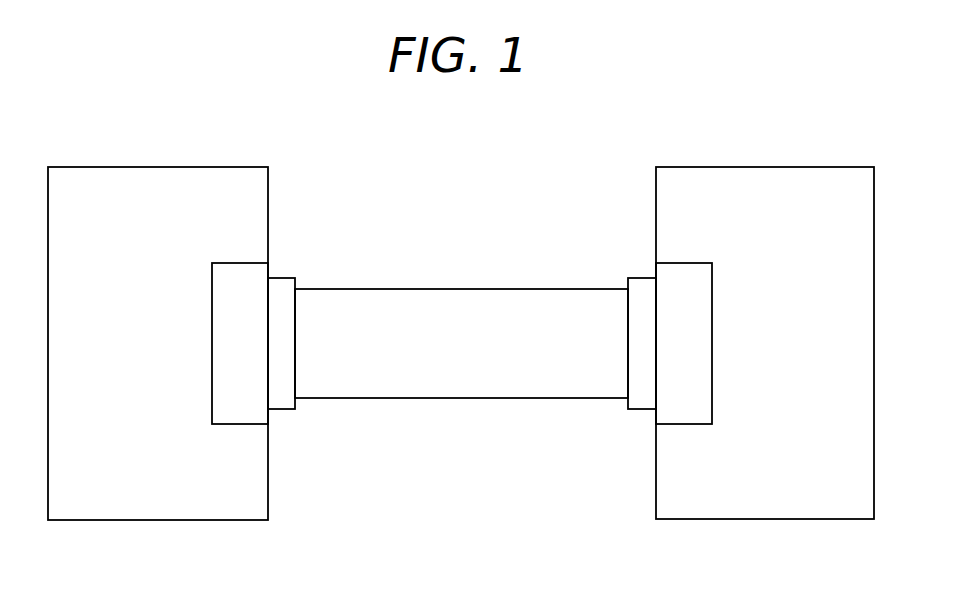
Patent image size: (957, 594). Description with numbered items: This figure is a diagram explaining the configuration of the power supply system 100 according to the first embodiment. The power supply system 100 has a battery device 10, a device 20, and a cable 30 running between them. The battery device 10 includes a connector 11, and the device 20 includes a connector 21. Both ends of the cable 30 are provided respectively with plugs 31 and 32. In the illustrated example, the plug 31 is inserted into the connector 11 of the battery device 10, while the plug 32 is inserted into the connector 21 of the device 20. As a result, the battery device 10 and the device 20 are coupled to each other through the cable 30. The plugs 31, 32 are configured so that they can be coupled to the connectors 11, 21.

The power supply system 100 is at (483, 153).
The battery device 10 is at (158, 167).
The connector 11 is at (240, 263).
The device 20 is at (761, 167).
The connector 21 is at (685, 263).
The cable 30 is at (447, 289).
The plug 31 is at (283, 278).
The plug 32 is at (643, 278).